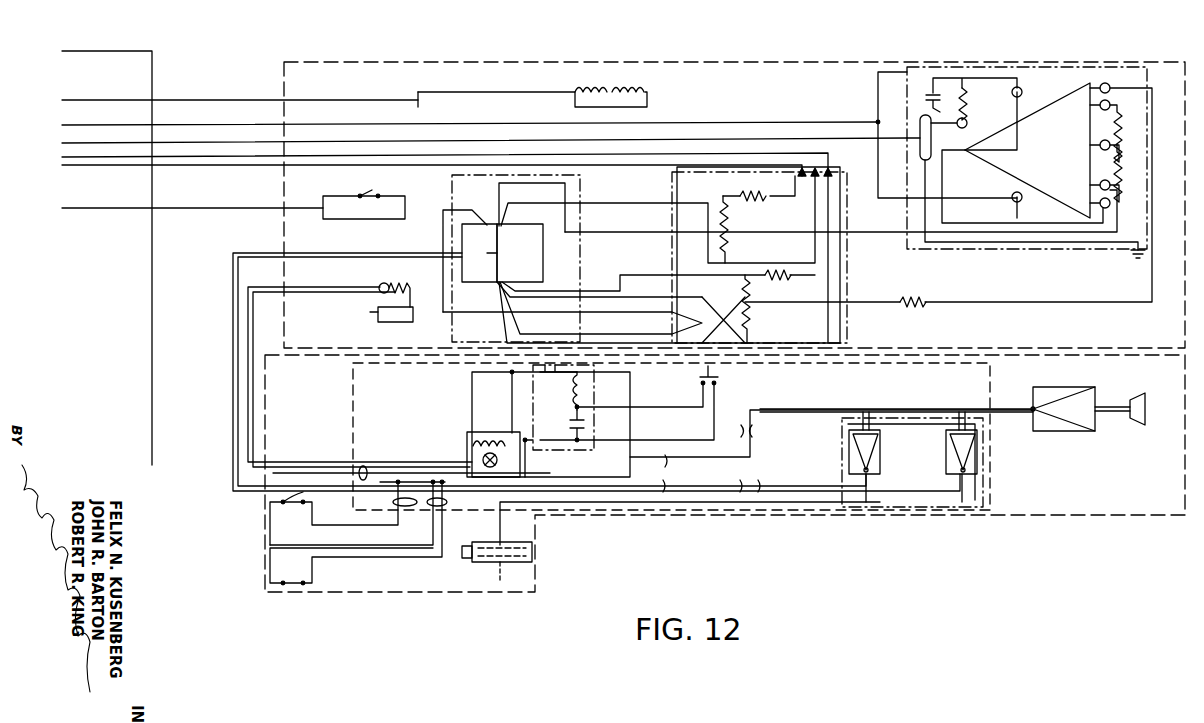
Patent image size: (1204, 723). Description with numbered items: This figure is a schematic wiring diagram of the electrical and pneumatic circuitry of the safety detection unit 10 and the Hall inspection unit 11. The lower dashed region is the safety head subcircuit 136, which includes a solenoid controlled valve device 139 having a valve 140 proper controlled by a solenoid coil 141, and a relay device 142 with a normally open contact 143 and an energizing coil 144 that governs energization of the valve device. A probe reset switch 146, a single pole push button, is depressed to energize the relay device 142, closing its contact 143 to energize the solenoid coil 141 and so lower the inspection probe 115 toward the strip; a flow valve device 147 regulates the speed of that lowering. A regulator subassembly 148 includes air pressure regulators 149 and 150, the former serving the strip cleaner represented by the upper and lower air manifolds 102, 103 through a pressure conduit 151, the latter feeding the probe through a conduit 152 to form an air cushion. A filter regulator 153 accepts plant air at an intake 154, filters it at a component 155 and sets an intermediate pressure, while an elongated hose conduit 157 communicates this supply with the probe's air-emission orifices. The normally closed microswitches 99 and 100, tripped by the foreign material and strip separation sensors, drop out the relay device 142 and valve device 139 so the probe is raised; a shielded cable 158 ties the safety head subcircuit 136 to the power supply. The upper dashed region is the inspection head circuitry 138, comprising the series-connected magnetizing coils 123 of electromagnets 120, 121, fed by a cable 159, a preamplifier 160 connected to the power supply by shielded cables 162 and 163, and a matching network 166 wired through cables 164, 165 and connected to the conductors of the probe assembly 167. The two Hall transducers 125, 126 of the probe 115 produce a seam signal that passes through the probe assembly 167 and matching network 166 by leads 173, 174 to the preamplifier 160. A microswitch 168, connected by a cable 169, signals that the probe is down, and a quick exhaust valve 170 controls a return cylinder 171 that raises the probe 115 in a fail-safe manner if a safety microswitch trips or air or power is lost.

The safety detection unit 10 is at (1000, 517).
The Hall inspection unit 11 is at (961, 62).
The microswitch 99 is at (278, 508).
The microswitch 100 is at (286, 586).
The upper air manifold 102 is at (535, 548).
The lower air manifold 103 is at (520, 562).
The inspection probe 115 is at (546, 233).
The electromagnet 120 is at (565, 68).
The electromagnet 121 is at (662, 65).
The magnetizing coils 123 is at (622, 82).
The Hall transducer 125 is at (487, 225).
The Hall transducer 126 is at (490, 284).
The safety head subcircuit 136 is at (352, 393).
The inspection head circuitry 138 is at (280, 227).
The solenoid controlled valve device 139 is at (467, 442).
The valve 140 is at (482, 460).
The solenoid coil 141 is at (490, 440).
The relay device 142 is at (597, 392).
The normally open contact 143 is at (585, 426).
The energizing coil 144 is at (572, 386).
The probe reset switch 146 is at (722, 383).
The flow valve device 147 is at (758, 433).
The regulator subassembly 148 is at (840, 431).
The air pressure regulator 149 is at (950, 464).
The air pressure regulator 150 is at (879, 446).
The pressure conduit 151 is at (498, 524).
The conduit 152 is at (1, 0).
The filter regulator 153 is at (1053, 432).
The intake 154 is at (1140, 392).
The filter component 155 is at (1062, 368).
The hose conduit 157 is at (247, 300).
The shielded electrical cable 158 is at (62, 51).
The cable 159 is at (62, 100).
The preamplifier 160 is at (905, 88).
The shielded cable 162 is at (449, 125).
The shielded cable 163 is at (462, 143).
The cable 164 is at (423, 246).
The cable 165 is at (66, 166).
The matching network 166 is at (849, 201).
The probe assembly 167 is at (582, 191).
The microswitch 168 is at (359, 196).
The cable 169 is at (170, 208).
The quick exhaust valve 170 is at (396, 282).
The return cylinder 171 is at (395, 322).
The lead 173 is at (870, 235).
The lead 174 is at (966, 300).